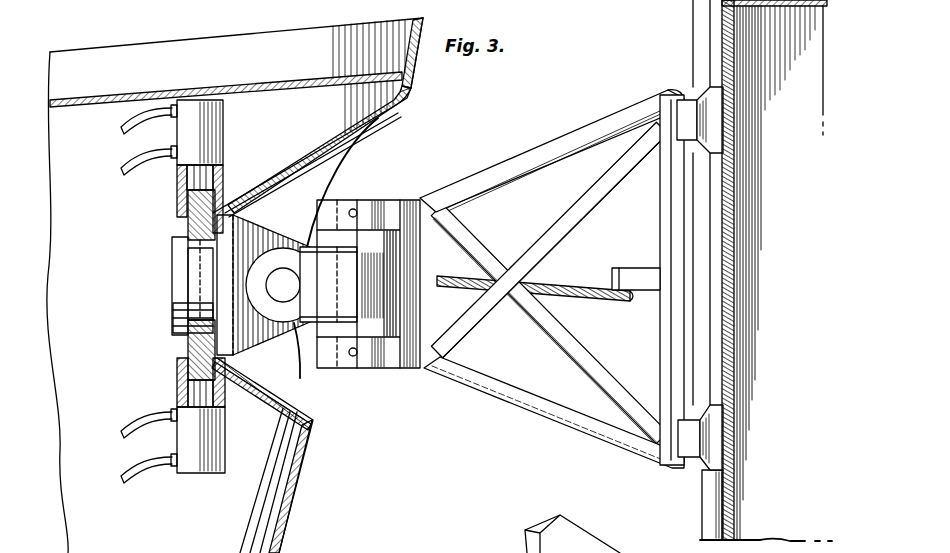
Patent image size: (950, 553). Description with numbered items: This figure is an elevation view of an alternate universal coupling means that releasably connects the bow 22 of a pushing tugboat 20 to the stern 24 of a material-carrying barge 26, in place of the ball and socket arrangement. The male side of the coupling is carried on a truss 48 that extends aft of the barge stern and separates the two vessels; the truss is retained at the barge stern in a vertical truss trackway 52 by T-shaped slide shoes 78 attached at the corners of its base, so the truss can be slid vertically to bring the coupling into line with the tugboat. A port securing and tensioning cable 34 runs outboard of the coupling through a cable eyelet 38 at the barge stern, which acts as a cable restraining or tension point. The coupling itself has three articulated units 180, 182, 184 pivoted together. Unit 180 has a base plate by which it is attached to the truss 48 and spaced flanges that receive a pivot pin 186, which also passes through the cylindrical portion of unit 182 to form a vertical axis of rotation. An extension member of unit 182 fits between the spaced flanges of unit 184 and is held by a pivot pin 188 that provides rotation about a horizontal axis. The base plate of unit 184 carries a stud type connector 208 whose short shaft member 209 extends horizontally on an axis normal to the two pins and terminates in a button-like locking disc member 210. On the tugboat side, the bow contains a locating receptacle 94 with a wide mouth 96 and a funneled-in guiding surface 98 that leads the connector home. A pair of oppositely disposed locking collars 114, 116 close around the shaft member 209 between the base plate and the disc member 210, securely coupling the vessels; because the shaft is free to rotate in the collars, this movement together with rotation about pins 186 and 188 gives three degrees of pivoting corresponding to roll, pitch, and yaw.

The pushing tugboat 20 is at (297, 523).
The bow 22 is at (307, 458).
The stern 24 is at (727, 518).
The material-carrying barge 26 is at (720, 52).
The port securing and tensioning cable 34 is at (590, 299).
The port cable eyelet 38 is at (626, 267).
The truss 48 is at (508, 156).
The vertical truss trackway 52 is at (710, 492).
The slide shoe 78 is at (715, 118).
The locating receptacle 94 is at (283, 380).
The wide mouth 96 is at (293, 167).
The funneled-in guiding surface 98 is at (371, 121).
The locking collar 114 is at (187, 220).
The locking collar 116 is at (193, 340).
The articulated unit 180 is at (390, 194).
The articulated unit 182 is at (328, 243).
The articulated unit 184 is at (247, 247).
The pivot pin 186 is at (363, 357).
The pivot pin 188 is at (283, 290).
The stud type connector 208 is at (172, 323).
The shaft member 209 is at (188, 274).
The locking disc member 210 is at (172, 254).